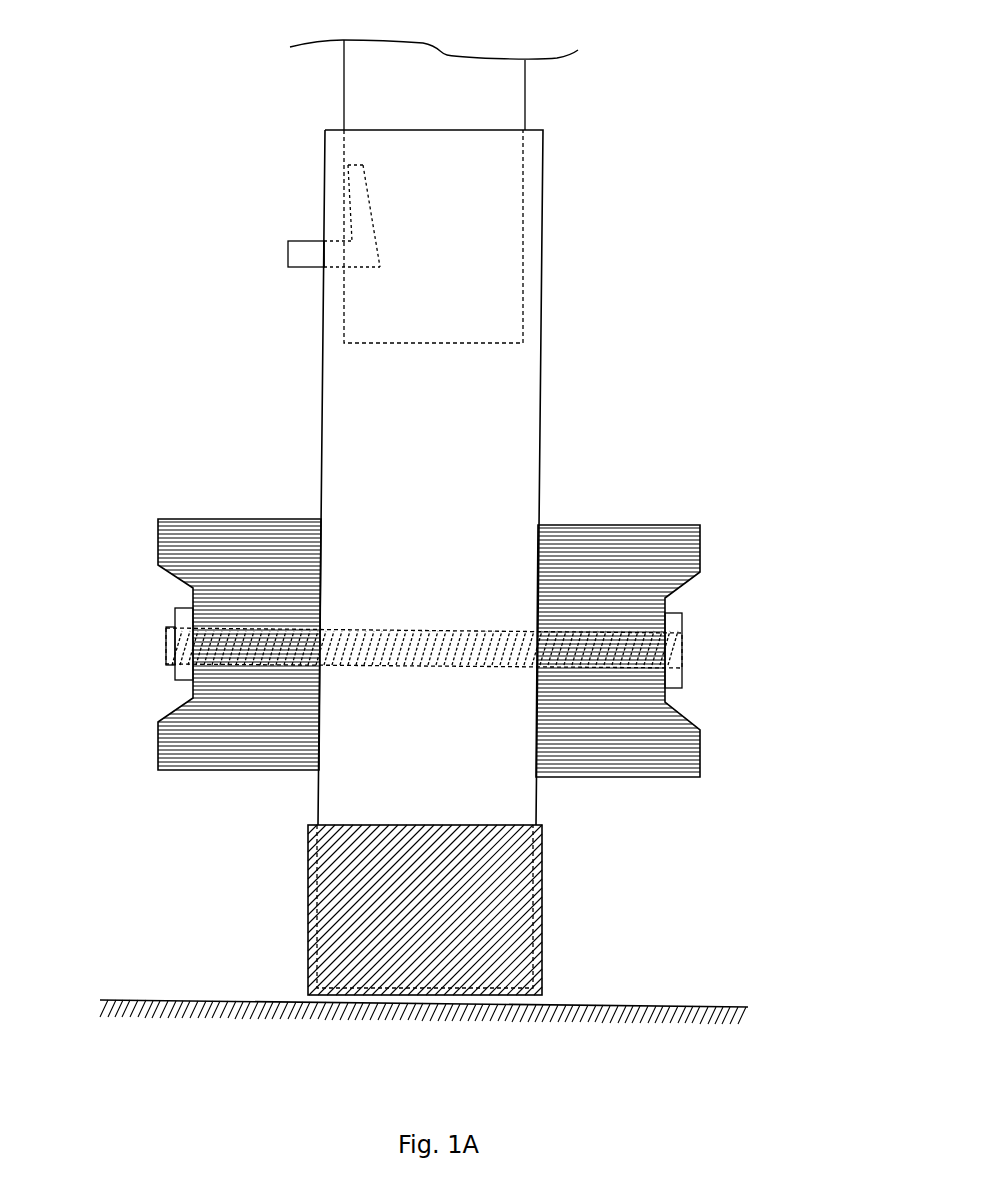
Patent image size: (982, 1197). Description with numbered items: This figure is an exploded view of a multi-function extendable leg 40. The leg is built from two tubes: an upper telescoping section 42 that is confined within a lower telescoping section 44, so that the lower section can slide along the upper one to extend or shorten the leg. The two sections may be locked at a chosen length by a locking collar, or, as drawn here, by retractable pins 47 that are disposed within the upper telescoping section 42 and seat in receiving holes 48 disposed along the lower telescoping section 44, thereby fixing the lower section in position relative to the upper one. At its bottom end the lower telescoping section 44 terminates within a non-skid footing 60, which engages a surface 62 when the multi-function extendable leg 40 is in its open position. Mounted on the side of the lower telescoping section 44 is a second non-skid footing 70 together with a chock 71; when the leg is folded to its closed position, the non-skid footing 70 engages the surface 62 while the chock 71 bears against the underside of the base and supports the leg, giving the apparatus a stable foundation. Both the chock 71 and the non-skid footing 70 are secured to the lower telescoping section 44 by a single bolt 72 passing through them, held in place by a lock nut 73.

The multi-function extendable leg 40 is at (226, 99).
The upper telescoping section 42 is at (526, 76).
The lower telescoping section 44 is at (540, 470).
The retractable pins 47 is at (307, 241).
The receiving holes 48 is at (320, 272).
The non-skid footing 60 is at (542, 953).
The surface 62 is at (244, 1000).
The non-skid footing 70 is at (645, 778).
The chock 71 is at (248, 519).
The bolt 72 is at (682, 642).
The lock nut 73 is at (180, 683).